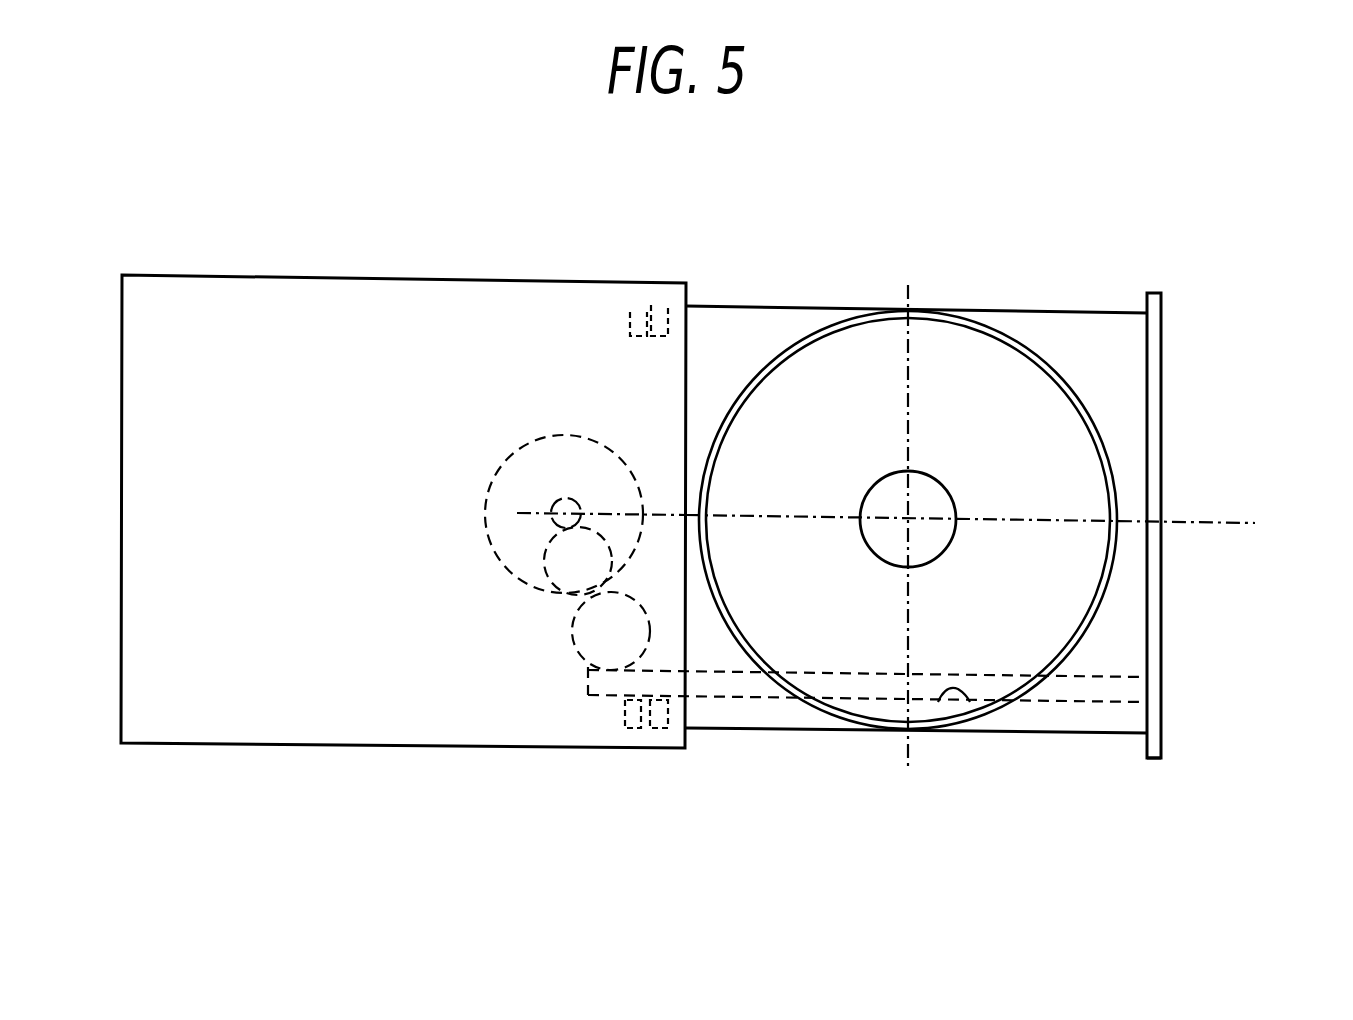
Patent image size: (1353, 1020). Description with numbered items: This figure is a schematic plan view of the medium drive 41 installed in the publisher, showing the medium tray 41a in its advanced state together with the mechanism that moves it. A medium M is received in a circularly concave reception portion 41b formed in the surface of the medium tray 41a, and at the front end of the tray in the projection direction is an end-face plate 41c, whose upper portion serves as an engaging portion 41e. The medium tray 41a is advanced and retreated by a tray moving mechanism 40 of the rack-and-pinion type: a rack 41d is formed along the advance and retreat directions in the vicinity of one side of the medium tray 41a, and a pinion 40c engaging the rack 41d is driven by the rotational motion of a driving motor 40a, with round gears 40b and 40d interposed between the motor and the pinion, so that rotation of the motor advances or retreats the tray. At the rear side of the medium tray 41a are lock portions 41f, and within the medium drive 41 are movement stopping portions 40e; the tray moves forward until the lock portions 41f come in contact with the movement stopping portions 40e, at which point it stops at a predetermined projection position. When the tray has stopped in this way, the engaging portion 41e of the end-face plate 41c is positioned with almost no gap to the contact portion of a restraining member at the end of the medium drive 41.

The tray moving mechanism 40 is at (360, 448).
The driving motor 40a is at (553, 470).
The round gear 40b is at (556, 517).
The pinion 40c is at (572, 630).
The round gear 40d is at (548, 576).
The movement stopping portion 40e is at (660, 305).
The medium drive 41 is at (447, 745).
The medium tray 41a is at (792, 728).
The reception portion 41b is at (948, 695).
The end-face plate 41c is at (1161, 602).
The rack 41d is at (1003, 673).
The upper portion (engaging portion) 41e is at (1158, 748).
The lock portion 41f is at (633, 310).
The medium M is at (1078, 478).